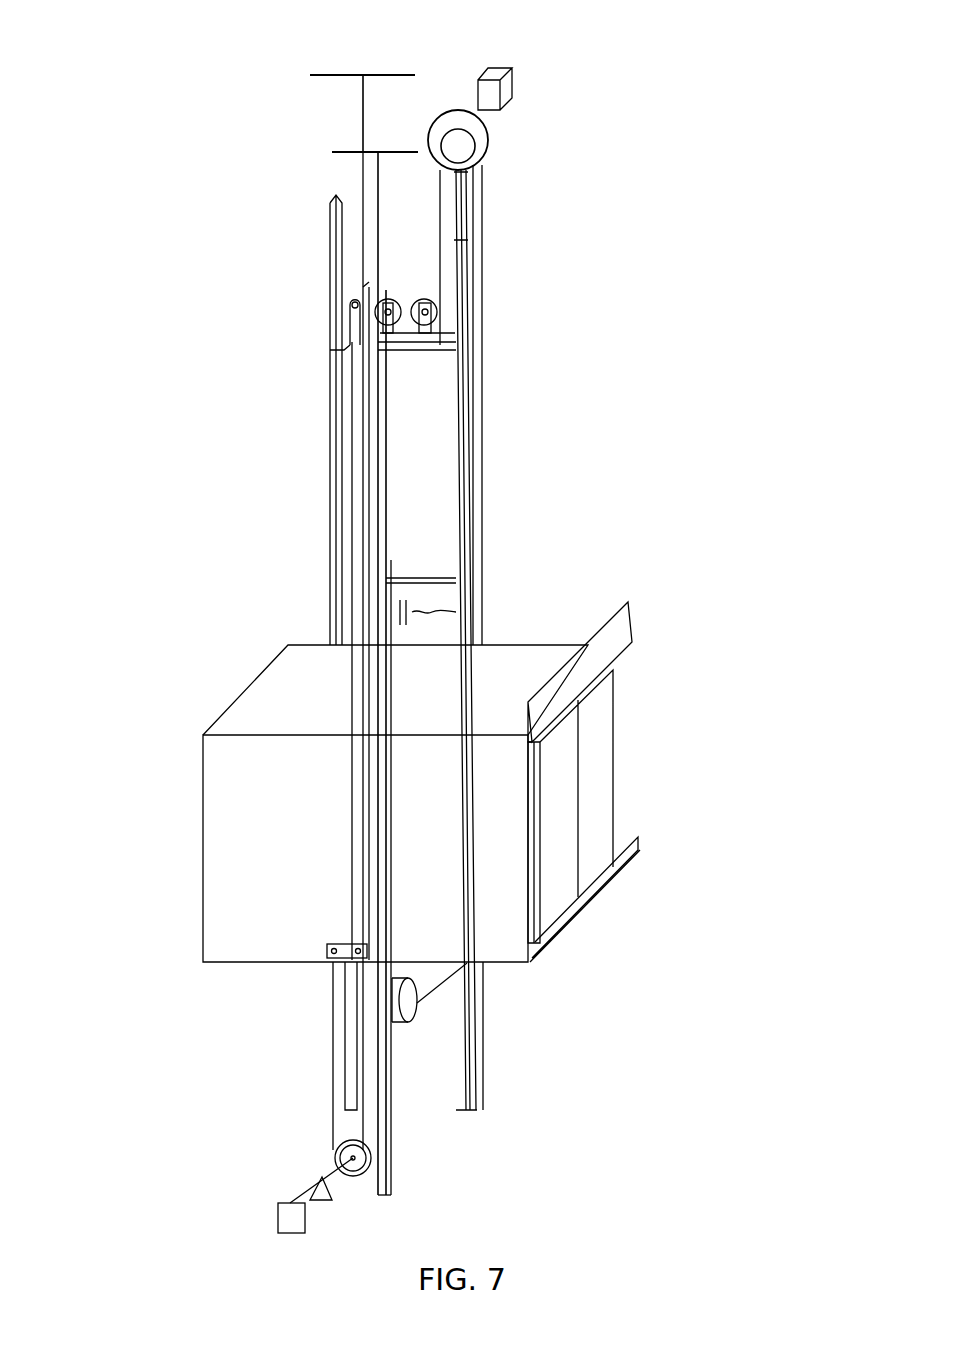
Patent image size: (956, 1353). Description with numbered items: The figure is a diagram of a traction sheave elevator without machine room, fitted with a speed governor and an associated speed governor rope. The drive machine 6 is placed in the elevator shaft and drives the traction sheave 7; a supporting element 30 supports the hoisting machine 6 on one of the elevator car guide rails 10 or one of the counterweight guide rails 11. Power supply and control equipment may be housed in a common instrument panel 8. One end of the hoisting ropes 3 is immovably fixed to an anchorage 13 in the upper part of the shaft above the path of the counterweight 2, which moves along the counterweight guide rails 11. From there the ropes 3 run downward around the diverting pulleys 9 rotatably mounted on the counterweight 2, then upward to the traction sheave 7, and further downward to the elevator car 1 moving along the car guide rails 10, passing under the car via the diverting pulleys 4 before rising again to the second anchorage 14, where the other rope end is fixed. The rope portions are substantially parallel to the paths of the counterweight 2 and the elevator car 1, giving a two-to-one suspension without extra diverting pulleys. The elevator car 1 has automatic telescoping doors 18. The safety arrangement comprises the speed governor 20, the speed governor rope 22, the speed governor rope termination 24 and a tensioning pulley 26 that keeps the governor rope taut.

The elevator car 1 is at (498, 640).
The counterweight 2 is at (440, 387).
The hoisting ropes 3 is at (373, 265).
The diverting pulleys 4 is at (417, 988).
The drive machine 6 is at (485, 128).
The traction sheave 7 is at (432, 123).
The instrument panel 8 is at (520, 80).
The diverting pulleys 9 is at (388, 293).
The car guide rails 10 is at (370, 515).
The counterweight guide rails 11 is at (340, 190).
The anchorage 13 is at (365, 58).
The anchorage 14 is at (353, 152).
The automatic telescoping doors 18 is at (590, 775).
The speed governor 20 is at (350, 304).
The speed governor rope 22 is at (352, 792).
The speed governor rope termination 24 is at (328, 950).
The tensioning pulley 26 is at (322, 1160).
The supporting element 30 is at (465, 177).